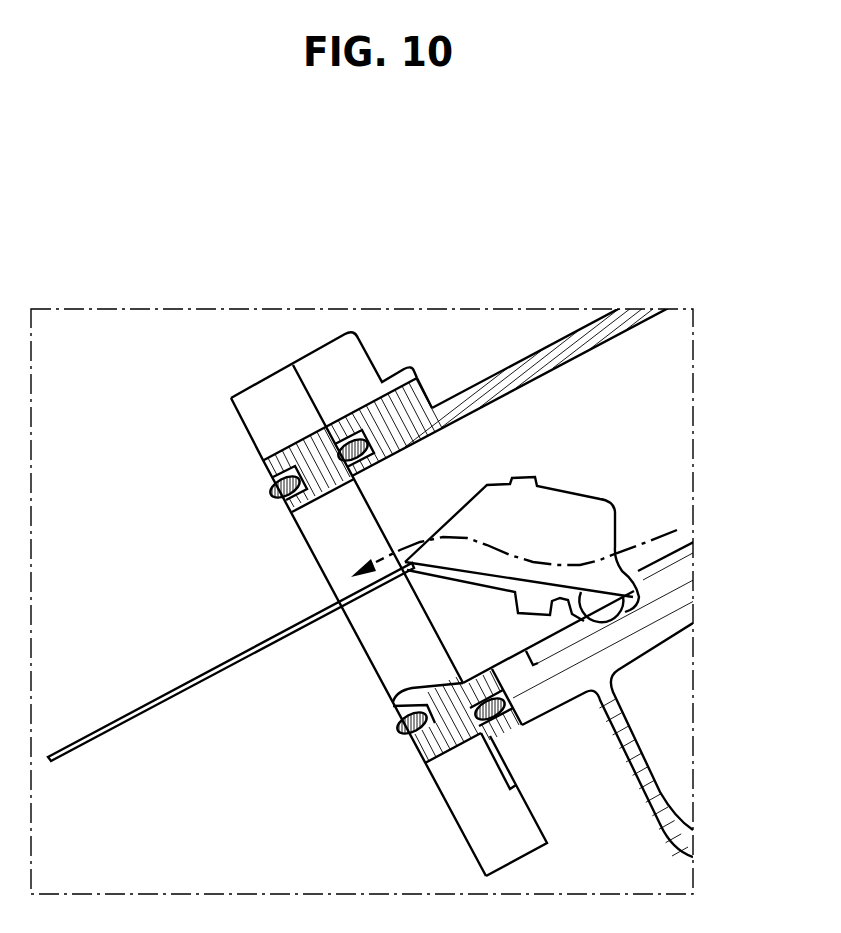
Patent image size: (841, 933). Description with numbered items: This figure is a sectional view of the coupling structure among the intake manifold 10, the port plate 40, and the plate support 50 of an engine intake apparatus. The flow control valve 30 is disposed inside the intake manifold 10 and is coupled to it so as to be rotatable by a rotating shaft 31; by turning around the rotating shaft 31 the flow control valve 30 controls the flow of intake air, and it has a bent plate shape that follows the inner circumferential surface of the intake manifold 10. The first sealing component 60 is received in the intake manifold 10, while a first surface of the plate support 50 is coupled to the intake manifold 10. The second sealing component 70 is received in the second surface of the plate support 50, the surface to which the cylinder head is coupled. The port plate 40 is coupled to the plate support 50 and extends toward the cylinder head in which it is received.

The intake manifold 10 is at (488, 348).
The flow control valve 30 is at (580, 528).
The rotating shaft 31 is at (604, 605).
The port plate 40 is at (165, 672).
The plate support 50 is at (262, 417).
The first sealing component 60 is at (347, 443).
The second sealing component 70 is at (405, 726).